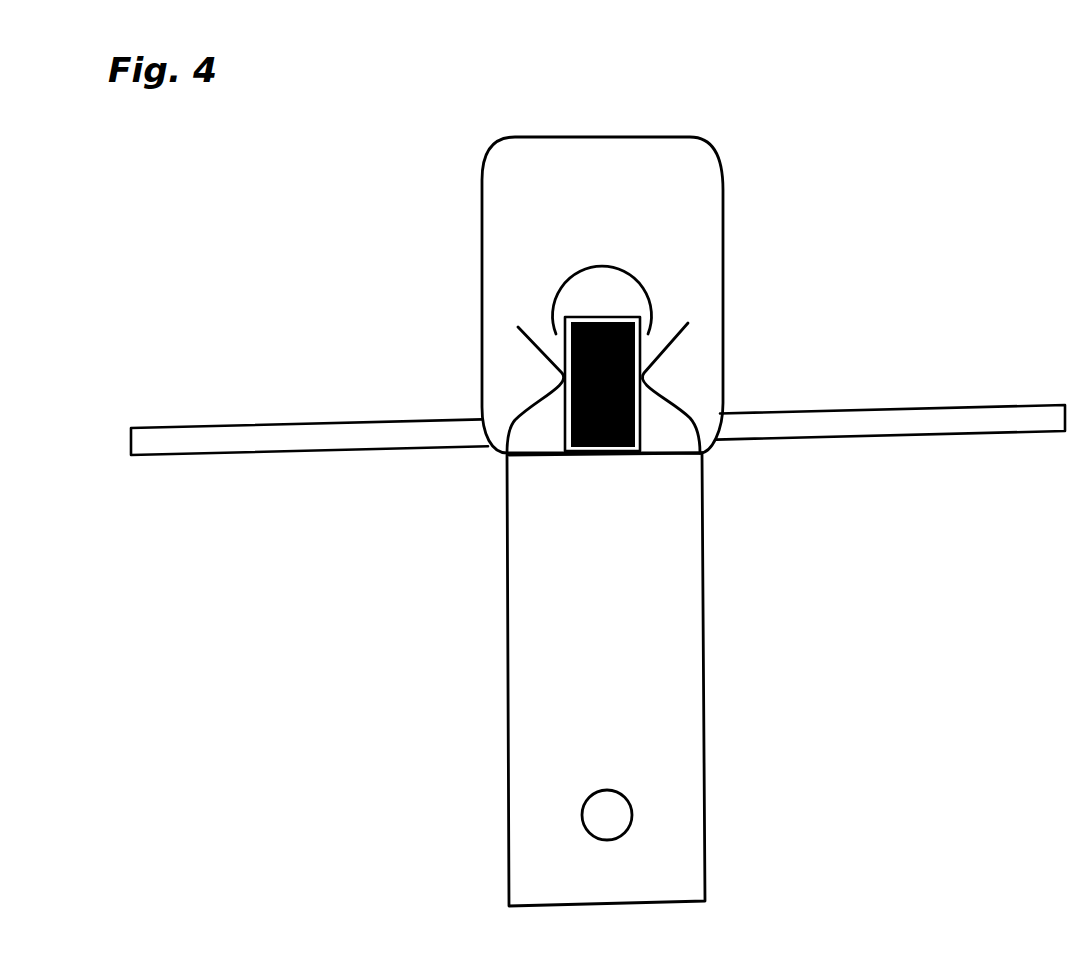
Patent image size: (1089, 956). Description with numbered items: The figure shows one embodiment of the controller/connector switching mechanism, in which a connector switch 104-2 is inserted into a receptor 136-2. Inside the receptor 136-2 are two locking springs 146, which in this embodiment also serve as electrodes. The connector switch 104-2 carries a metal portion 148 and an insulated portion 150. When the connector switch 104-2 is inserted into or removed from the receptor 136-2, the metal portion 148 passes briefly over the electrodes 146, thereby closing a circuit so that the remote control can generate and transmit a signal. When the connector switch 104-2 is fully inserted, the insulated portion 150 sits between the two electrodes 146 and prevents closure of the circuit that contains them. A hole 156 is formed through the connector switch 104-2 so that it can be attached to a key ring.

The receptor 136-2 is at (602, 295).
The locking springs 146 is at (536, 346).
The metal portion 148 is at (606, 267).
The insulated portion 150 is at (642, 414).
The connector switch 104-2 is at (704, 675).
The hole 156 is at (624, 834).